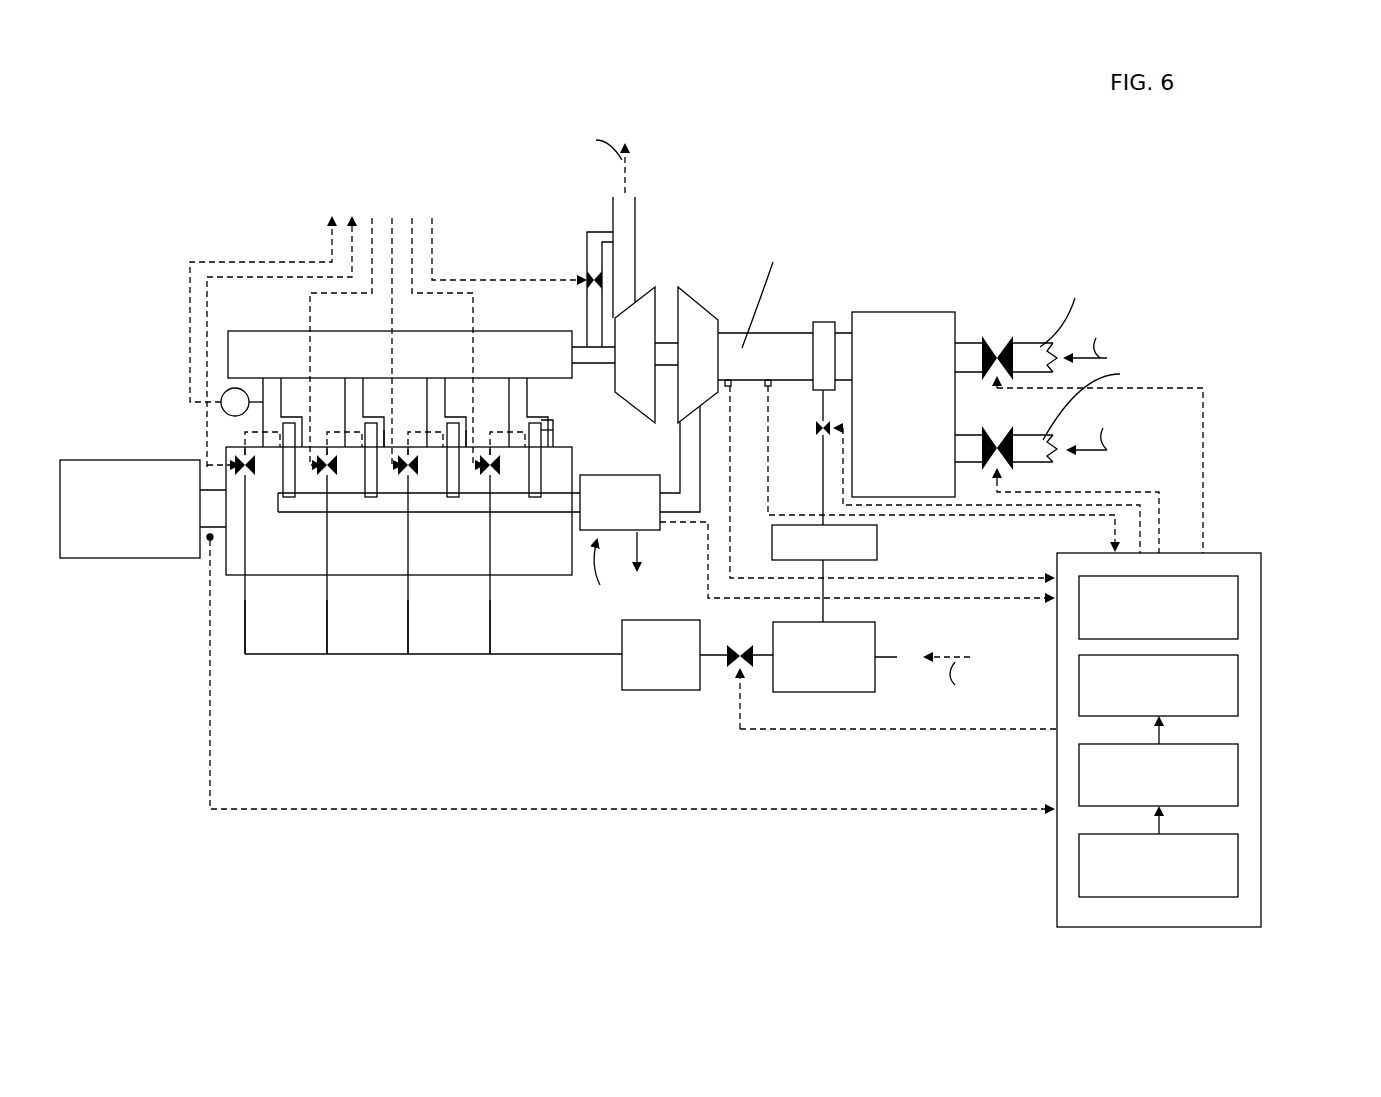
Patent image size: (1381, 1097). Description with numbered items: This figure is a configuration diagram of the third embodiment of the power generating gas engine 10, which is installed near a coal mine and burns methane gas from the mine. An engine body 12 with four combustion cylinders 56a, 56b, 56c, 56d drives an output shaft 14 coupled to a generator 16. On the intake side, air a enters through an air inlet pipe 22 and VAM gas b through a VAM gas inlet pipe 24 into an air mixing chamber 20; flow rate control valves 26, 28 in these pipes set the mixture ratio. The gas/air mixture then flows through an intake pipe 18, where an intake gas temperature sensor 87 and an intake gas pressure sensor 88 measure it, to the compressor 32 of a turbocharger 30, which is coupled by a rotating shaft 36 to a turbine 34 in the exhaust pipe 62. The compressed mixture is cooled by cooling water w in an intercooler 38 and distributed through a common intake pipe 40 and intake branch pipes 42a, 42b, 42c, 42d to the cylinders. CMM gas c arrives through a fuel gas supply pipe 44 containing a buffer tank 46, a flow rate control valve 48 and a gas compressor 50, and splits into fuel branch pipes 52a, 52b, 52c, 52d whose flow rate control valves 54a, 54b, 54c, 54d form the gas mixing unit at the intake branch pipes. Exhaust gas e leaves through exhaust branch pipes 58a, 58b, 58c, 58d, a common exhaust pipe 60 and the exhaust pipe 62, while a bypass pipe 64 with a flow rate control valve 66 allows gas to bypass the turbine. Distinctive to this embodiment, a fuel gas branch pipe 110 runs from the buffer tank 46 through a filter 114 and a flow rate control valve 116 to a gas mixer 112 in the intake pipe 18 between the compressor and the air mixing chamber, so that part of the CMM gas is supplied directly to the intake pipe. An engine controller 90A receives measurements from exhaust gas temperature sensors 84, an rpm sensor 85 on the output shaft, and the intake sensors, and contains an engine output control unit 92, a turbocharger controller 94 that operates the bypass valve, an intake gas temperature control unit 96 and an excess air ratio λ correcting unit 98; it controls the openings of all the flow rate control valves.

The power generating gas engine 10 is at (184, 262).
The engine body 12 is at (535, 577).
The output shaft 14 is at (205, 488).
The generator 16 is at (75, 460).
The intake pipe 18 is at (777, 332).
The air mixing chamber 20 is at (927, 312).
The air inlet pipe 22 is at (1030, 343).
The VAM gas inlet pipe 24 is at (1037, 435).
The flow rate control valve 26 is at (990, 343).
The flow rate control valve 28 is at (992, 435).
The turbocharger 30 is at (672, 282).
The compressor 32 is at (700, 305).
The turbine 34 is at (648, 286).
The rotating shaft 36 is at (667, 405).
The intercooler 38 is at (652, 535).
The common intake pipe 40 is at (566, 576).
The intake branch pipe 42a is at (545, 450).
The intake branch pipe 42b is at (453, 497).
The intake branch pipe 42c is at (371, 497).
The intake branch pipe 42d is at (290, 497).
The fuel gas supply pipe 44 is at (574, 657).
The buffer tank 46 is at (876, 630).
The flow rate control valve 48 is at (737, 672).
The gas compressor 50 is at (702, 633).
The fuel branch pipe 52a is at (492, 622).
The fuel branch pipe 52b is at (410, 622).
The fuel branch pipe 52c is at (329, 622).
The fuel branch pipe 52d is at (247, 622).
The flow rate control valve 54a is at (490, 475).
The flow rate control valve 54b is at (408, 475).
The flow rate control valve 54c is at (327, 475).
The flow rate control valve 54d is at (240, 452).
The combustion cylinder 56a is at (553, 412).
The combustion cylinder 56b is at (482, 415).
The combustion cylinder 56c is at (400, 415).
The combustion cylinder 56d is at (318, 415).
The exhaust branch pipe 58a is at (541, 392).
The exhaust branch pipe 58b is at (467, 347).
The exhaust branch pipe 58c is at (380, 347).
The exhaust branch pipe 58d is at (285, 415).
The common exhaust pipe 60 is at (240, 331).
The exhaust pipe 62 is at (613, 213).
The bypass pipe 64 is at (588, 235).
The flow rate control valve 66 is at (582, 275).
The exhaust gas temperature sensor 84 is at (227, 393).
The rpm sensor 85 is at (208, 563).
The intake gas temperature sensor 87 is at (770, 382).
The intake gas pressure sensor 88 is at (730, 388).
The engine controller 90A is at (1313, 560).
The engine output control unit 92 is at (1238, 603).
The turbocharger controller 94 is at (1238, 681).
The intake gas temperature control unit 96 is at (1238, 859).
The excess air ratio λ correcting unit 98 is at (1238, 770).
The fuel gas branch pipe 110 is at (820, 507).
The gas mixer 112 is at (838, 300).
The filter 114 is at (877, 543).
The flow rate control valve 116 is at (815, 424).